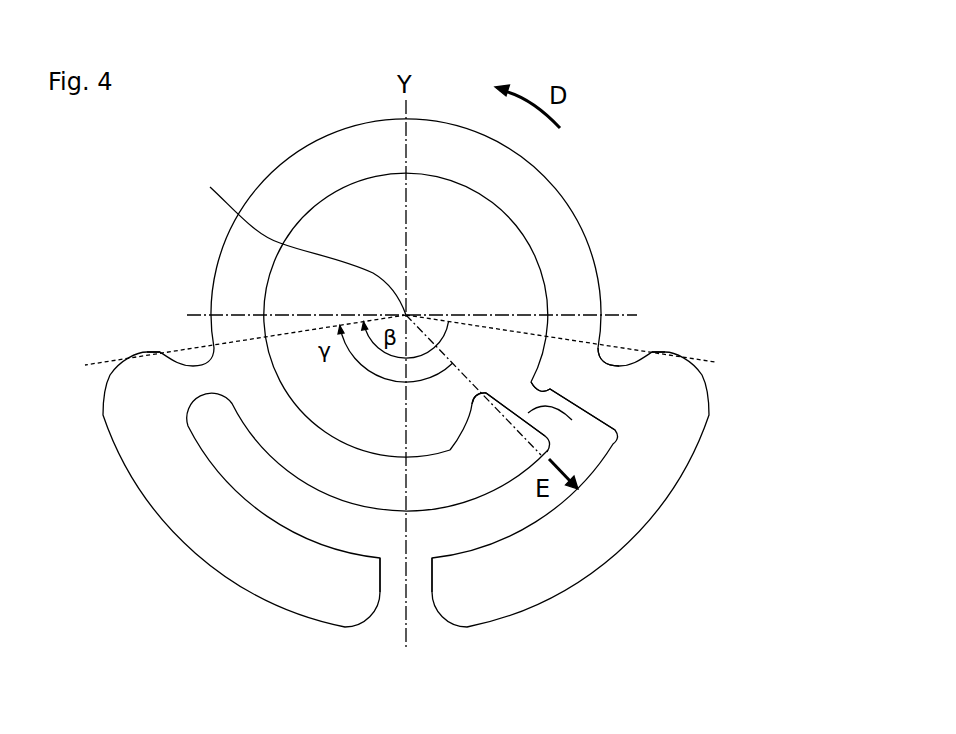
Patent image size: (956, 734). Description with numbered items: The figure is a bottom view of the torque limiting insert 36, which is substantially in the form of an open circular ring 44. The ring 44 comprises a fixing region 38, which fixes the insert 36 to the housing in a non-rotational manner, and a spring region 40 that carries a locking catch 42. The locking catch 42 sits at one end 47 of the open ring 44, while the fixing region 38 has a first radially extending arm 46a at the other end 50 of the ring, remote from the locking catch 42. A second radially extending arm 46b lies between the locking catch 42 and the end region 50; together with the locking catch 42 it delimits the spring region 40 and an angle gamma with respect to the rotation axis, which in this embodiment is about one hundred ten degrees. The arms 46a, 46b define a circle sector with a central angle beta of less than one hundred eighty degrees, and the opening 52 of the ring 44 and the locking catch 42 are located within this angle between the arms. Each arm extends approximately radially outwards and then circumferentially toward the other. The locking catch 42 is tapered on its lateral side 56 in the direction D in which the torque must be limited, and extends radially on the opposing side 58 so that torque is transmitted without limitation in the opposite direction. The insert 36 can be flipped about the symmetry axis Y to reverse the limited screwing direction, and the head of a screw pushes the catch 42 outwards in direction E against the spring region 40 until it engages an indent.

The torque limiting insert 36 is at (307, 135).
The open circular ring 44 is at (283, 203).
The first radially extending arm 46a is at (687, 352).
The second radially extending arm 46b is at (133, 350).
The fixing region 38 is at (147, 340).
The end region 50 is at (595, 361).
The opposing side 58 is at (473, 402).
The lateral side 56 is at (483, 392).
The locking catch 42 is at (487, 400).
The end 47 is at (572, 420).
The opening 52 is at (548, 387).
The spring region 40 is at (390, 490).